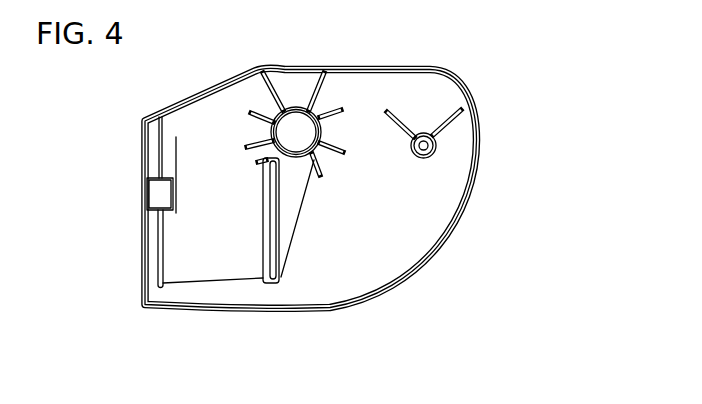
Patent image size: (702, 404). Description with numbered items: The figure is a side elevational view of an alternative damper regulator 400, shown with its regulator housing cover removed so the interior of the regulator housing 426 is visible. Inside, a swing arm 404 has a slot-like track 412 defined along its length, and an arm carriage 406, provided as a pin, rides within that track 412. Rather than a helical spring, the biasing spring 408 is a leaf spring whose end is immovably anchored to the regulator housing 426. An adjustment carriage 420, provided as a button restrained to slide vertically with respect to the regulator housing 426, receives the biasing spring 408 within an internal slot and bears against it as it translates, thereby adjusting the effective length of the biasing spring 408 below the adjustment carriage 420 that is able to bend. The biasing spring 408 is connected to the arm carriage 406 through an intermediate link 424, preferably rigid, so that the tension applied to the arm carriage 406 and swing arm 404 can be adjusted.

The damper regulator 400 is at (323, 198).
The swing arm 404 is at (298, 194).
The arm carriage 406 is at (284, 278).
The biasing spring 408 is at (160, 243).
The track 412 is at (268, 212).
The adjustment carriage 420 is at (160, 196).
The intermediate link 424 is at (218, 277).
The regulator housing 426 is at (460, 216).